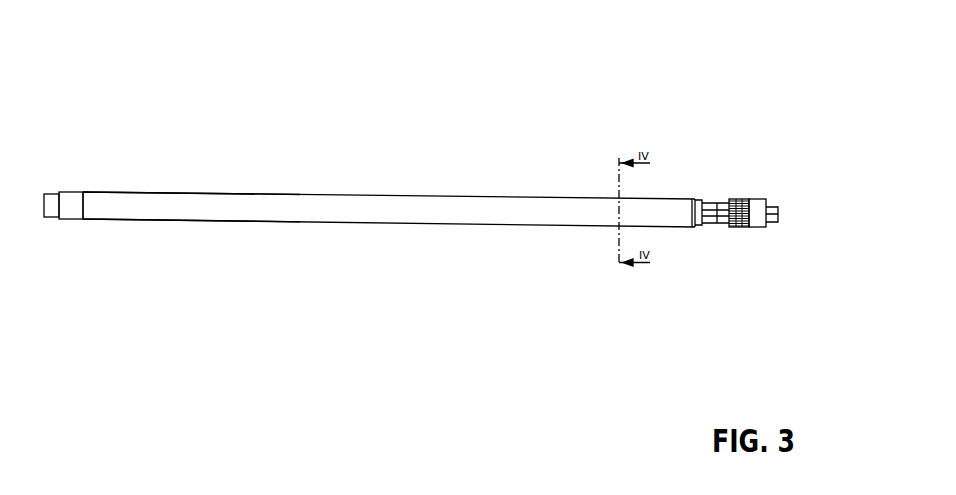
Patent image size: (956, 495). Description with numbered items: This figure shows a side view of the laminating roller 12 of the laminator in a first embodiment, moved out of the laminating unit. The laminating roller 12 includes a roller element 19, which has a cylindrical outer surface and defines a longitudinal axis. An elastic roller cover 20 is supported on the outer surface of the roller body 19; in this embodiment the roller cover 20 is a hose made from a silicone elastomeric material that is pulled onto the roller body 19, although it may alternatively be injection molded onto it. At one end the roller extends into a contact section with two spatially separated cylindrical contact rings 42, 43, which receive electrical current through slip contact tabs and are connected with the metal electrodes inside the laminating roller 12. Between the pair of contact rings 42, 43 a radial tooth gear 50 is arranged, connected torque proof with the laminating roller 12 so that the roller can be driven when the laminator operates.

The laminating roller 12 is at (338, 223).
The roller element 19 is at (73, 210).
The elastic roller cover 20 is at (207, 207).
The contact ring 42 is at (723, 208).
The radial tooth gear 50 is at (739, 201).
The contact ring 43 is at (772, 207).